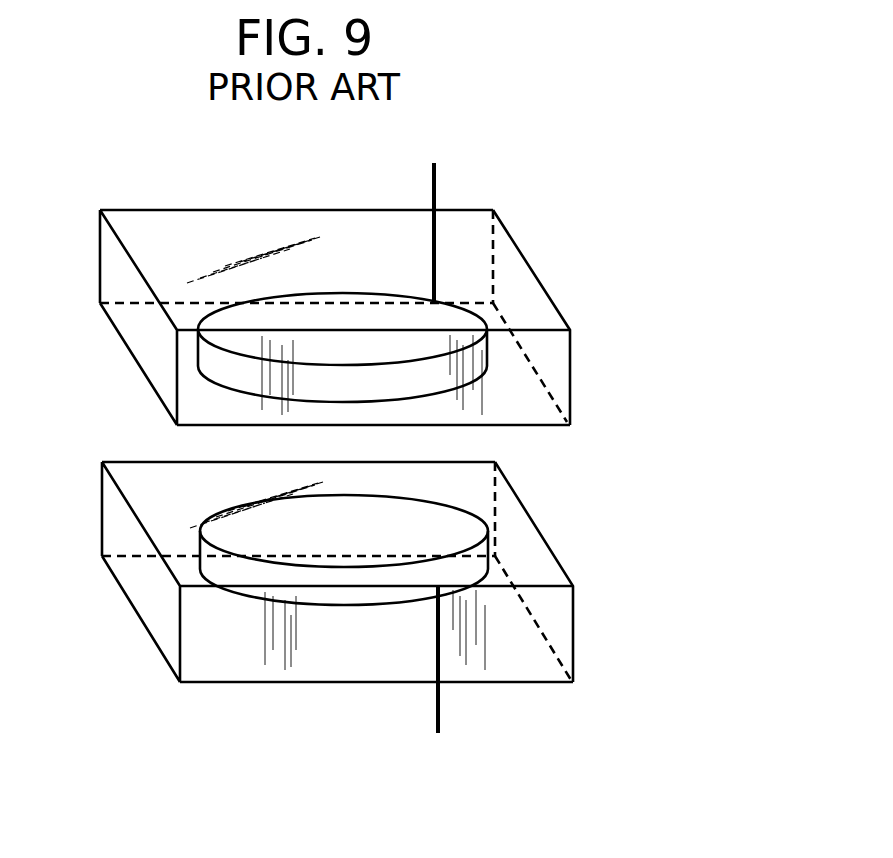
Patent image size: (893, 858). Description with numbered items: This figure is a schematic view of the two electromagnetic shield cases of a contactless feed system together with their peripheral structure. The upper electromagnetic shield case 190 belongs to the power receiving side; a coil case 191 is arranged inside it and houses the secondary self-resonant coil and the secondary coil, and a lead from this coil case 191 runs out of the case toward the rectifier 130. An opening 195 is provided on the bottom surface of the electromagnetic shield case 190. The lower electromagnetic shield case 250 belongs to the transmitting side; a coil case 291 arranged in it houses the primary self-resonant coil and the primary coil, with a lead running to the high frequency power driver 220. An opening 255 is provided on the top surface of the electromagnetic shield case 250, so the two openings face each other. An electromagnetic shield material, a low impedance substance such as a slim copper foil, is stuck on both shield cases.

The electromagnetic shield case 190 is at (167, 209).
The coil case 191 is at (198, 353).
The opening 195 is at (522, 400).
The rectifier 130 is at (432, 219).
The electromagnetic shield case 250 is at (211, 684).
The opening 255 is at (520, 555).
The coil case 291 is at (202, 548).
The high frequency power driver 220 is at (438, 687).